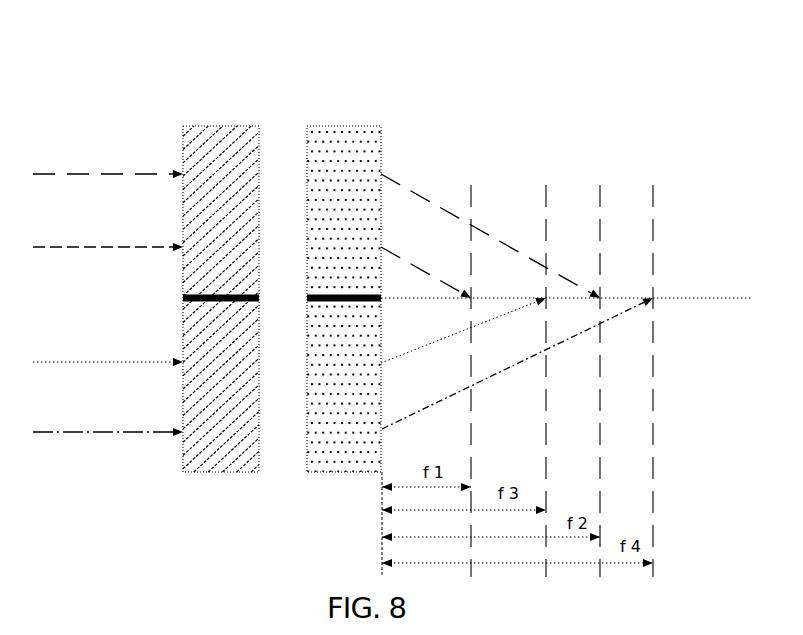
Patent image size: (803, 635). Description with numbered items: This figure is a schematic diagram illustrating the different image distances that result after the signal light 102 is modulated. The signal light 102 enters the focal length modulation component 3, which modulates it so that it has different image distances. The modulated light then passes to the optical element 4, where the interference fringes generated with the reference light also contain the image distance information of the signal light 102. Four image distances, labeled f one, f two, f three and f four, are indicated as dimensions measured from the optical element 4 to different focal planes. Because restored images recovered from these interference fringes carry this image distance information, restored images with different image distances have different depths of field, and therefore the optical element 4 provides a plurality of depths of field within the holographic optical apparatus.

The signal light 102 is at (88, 172).
The focal length modulation component 3 is at (227, 125).
The optical element 4 is at (345, 126).